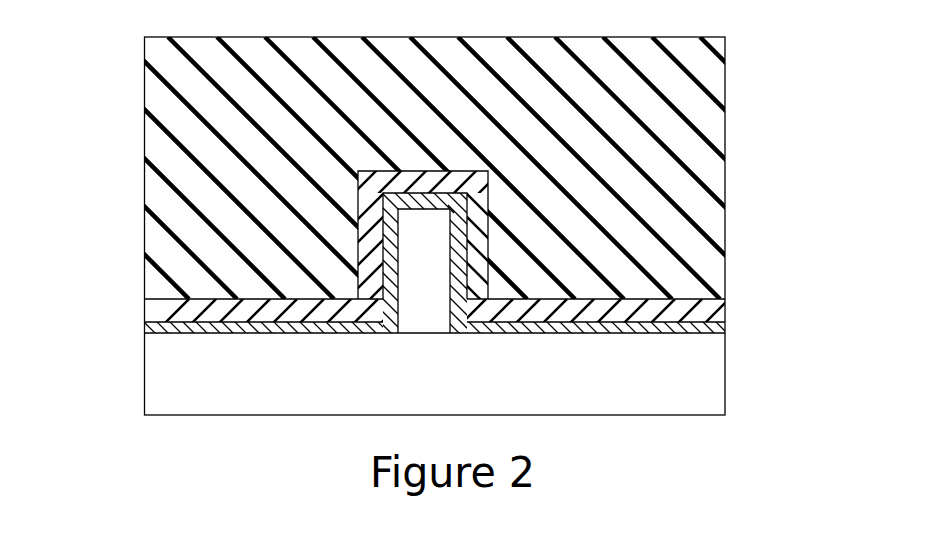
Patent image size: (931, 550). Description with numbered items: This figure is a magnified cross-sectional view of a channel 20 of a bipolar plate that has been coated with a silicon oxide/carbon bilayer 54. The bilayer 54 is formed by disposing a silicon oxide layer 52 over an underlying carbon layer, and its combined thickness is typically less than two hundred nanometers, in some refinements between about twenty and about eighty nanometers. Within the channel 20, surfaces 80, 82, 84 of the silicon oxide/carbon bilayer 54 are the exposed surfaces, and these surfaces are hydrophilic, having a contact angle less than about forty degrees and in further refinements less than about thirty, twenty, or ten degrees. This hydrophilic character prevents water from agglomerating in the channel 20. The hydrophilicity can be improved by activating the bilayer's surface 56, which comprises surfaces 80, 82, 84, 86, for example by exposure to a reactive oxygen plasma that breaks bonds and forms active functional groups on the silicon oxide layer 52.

The channel 20 is at (430, 322).
The silicon oxide layer 52 is at (452, 302).
The silicon oxide/carbon bilayer 54 is at (737, 320).
The surface 56 is at (398, 296).
The surface 80 is at (398, 248).
The surface 82 is at (420, 200).
The surface 84 is at (455, 252).
The surface 86 is at (213, 333).